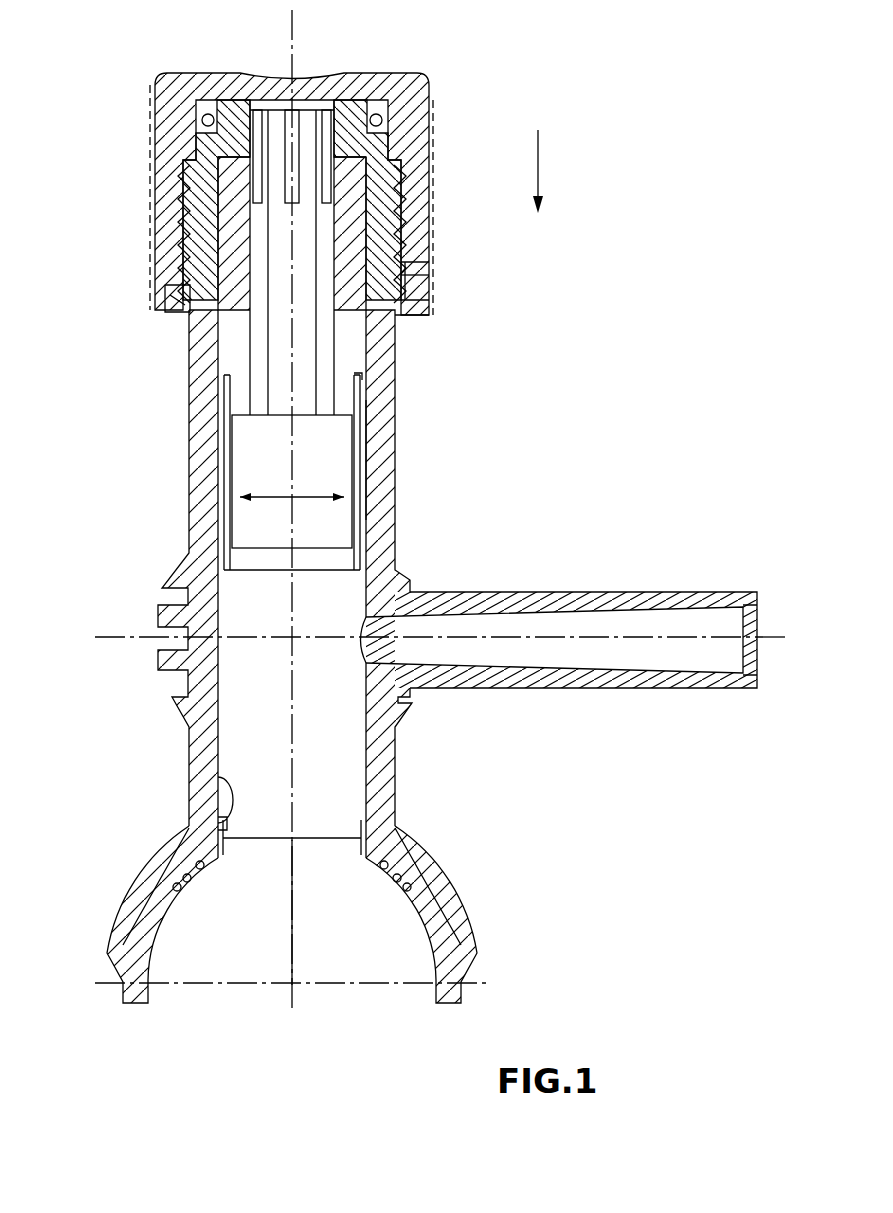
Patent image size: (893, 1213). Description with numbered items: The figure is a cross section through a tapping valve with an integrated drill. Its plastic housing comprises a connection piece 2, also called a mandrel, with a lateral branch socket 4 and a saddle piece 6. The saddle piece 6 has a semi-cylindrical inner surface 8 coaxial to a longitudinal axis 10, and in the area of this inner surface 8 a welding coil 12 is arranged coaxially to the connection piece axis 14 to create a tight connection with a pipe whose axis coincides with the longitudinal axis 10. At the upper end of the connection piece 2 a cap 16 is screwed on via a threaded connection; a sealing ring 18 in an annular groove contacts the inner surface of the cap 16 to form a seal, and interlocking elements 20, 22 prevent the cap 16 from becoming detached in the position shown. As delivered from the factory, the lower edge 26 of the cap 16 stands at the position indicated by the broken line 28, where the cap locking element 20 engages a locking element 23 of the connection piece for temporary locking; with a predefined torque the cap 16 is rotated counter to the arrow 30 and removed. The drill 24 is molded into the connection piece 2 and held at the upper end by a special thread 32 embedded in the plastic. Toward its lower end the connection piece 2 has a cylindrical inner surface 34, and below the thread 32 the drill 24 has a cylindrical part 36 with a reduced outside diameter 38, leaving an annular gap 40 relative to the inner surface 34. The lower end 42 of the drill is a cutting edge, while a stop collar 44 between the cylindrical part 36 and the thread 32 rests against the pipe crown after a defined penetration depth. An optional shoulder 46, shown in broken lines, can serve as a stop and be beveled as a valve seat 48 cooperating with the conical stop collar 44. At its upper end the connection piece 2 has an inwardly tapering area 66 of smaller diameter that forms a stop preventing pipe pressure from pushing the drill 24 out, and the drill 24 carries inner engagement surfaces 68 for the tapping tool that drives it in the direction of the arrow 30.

The connection piece 2 is at (383, 540).
The lateral branch socket 4 is at (587, 603).
The saddle piece 6 is at (463, 955).
The semi-cylindrical inner surface 8 is at (447, 898).
The longitudinal axis 10 is at (293, 985).
The welding coil 12 is at (413, 862).
The connection piece axis 14 is at (292, 883).
The cap 16 is at (412, 167).
The sealing ring 18 is at (427, 110).
The cap locking element 20 is at (420, 313).
The interlocking element 22 is at (405, 293).
The locking element of the connection piece 23 is at (405, 262).
The drill 24 is at (233, 388).
The lower edge 26 is at (173, 313).
The broken line 28 is at (157, 290).
The arrow 30 is at (538, 165).
The special thread 32 is at (418, 245).
The cylindrical inner surface 34 is at (357, 493).
The cylindrical part 36 is at (357, 450).
The reduced outside diameter 38 is at (240, 497).
The annular gap 40 is at (360, 422).
The lower end of the drill 42 is at (250, 568).
The stop collar 44 is at (363, 387).
The shoulder or annular collar 46 is at (223, 830).
The valve seat 48 is at (218, 778).
The area with smaller diameter 66 is at (213, 157).
The engagement surfaces 68 is at (248, 130).